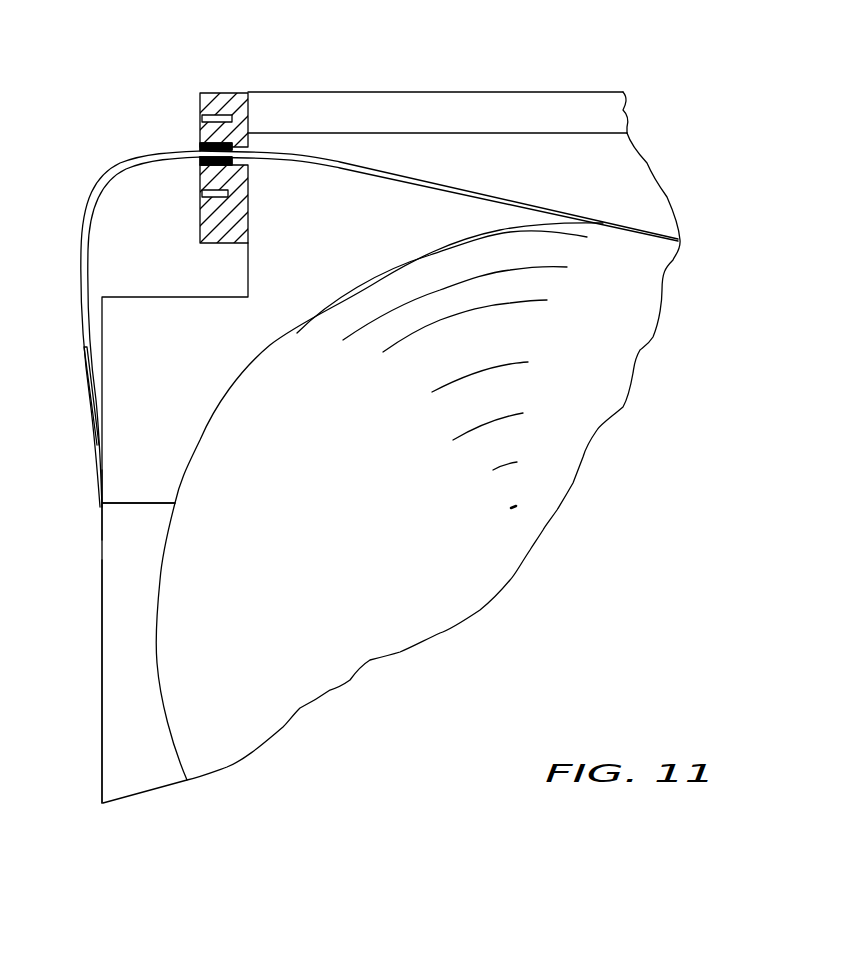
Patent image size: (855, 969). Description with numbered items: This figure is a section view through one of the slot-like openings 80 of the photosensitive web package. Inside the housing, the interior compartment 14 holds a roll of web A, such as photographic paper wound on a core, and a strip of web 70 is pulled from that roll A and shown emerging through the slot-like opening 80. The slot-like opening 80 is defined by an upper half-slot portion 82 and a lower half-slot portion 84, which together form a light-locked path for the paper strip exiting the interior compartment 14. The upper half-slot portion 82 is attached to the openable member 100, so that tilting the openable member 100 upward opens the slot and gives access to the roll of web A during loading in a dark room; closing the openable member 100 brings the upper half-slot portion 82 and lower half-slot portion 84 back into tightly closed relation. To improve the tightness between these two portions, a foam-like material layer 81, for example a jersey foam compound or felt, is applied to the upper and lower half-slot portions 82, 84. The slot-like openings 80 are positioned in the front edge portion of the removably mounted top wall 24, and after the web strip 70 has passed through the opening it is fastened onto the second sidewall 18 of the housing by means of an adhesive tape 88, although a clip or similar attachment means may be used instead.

The openable member 100 is at (510, 92).
The interior compartment 14 is at (617, 185).
The roll of web A is at (607, 357).
The upper half-slot portion 82 is at (232, 93).
The lower half-slot portion 84 is at (218, 243).
The slot-like opening 80 is at (200, 150).
The foam-like material layer 81 is at (200, 147).
The web strip 70 is at (80, 238).
The adhesive tape 88 is at (84, 375).
The top wall 24 is at (118, 468).
The second sidewall 18 is at (100, 601).